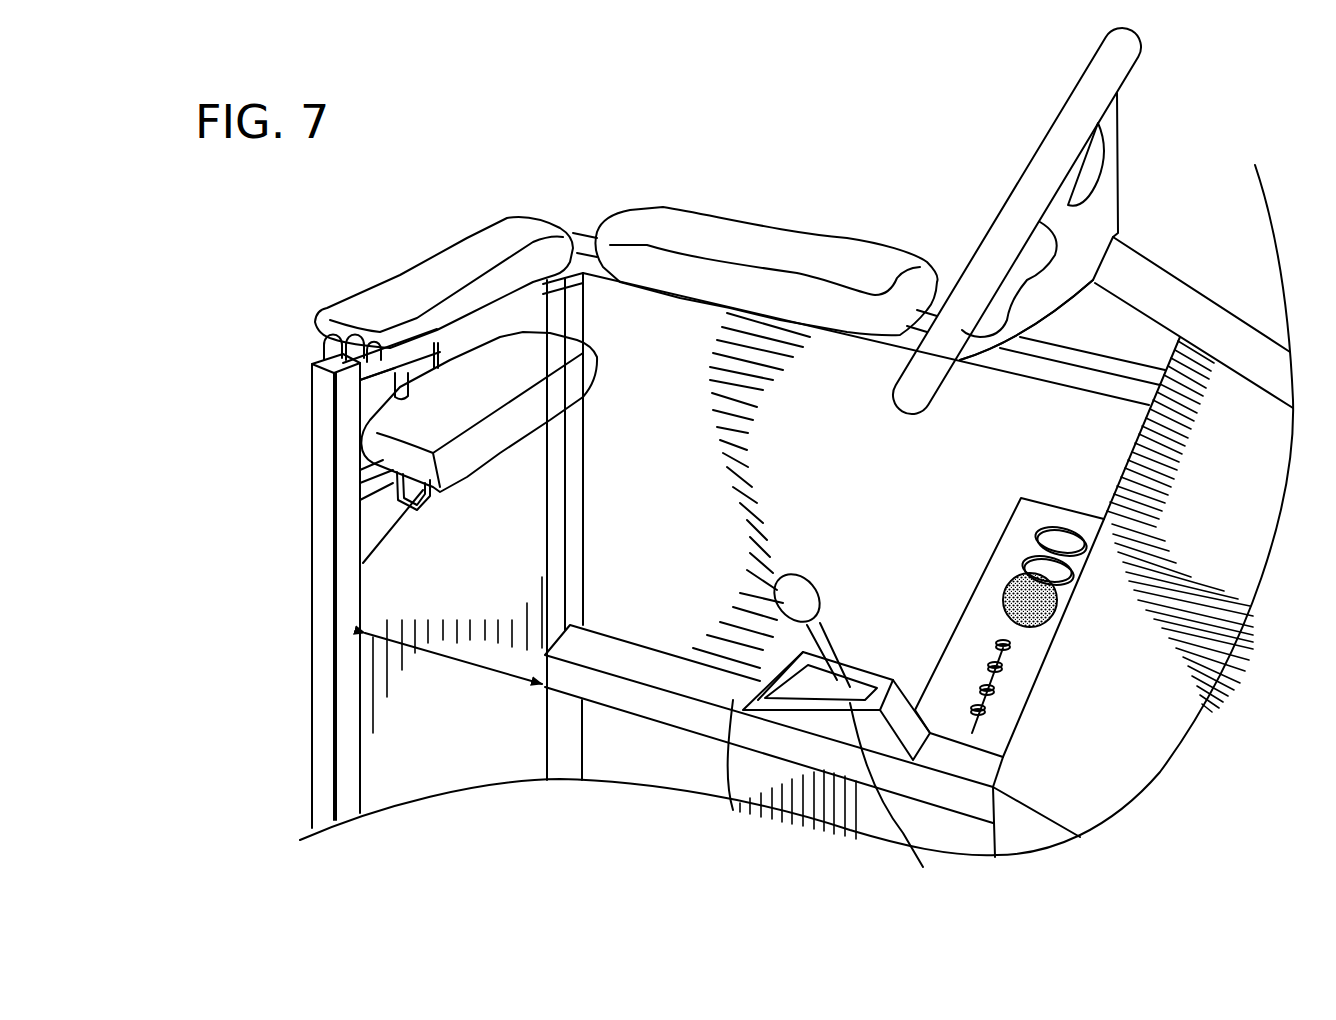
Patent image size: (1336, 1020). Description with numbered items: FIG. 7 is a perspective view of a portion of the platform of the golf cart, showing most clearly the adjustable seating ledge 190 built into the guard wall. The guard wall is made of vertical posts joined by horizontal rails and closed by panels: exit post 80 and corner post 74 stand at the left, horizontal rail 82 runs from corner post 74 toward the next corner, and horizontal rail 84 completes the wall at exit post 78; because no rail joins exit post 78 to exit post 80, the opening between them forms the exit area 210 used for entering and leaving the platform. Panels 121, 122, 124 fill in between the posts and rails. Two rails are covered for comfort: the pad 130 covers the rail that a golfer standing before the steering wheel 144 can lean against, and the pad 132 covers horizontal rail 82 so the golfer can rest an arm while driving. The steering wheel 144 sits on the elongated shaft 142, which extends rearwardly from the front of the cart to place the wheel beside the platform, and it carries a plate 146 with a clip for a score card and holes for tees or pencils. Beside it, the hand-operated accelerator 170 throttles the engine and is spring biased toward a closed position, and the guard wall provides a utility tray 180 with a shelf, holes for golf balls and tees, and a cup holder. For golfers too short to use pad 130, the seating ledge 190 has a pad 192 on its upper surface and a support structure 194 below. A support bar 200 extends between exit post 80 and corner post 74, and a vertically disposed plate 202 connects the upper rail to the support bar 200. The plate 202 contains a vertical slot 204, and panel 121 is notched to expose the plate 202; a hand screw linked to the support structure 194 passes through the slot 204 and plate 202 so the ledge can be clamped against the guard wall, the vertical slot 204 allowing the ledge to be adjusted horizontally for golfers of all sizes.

The corner post 74 is at (575, 318).
The exit post 78 is at (557, 712).
The exit post 80 is at (323, 493).
The horizontal rail 82 is at (1027, 367).
The horizontal rail 84 is at (733, 810).
The panel 121 is at (430, 589).
The panel 122 is at (787, 436).
The panel 124 is at (640, 781).
The pad 130 is at (413, 290).
The pad 132 is at (781, 242).
The elongated shaft 142 is at (1200, 327).
The steering wheel 144 is at (1023, 213).
The plate 146 is at (1085, 233).
The accelerator 170 is at (853, 734).
The utility tray 180 is at (1015, 545).
The seating ledge 190 is at (500, 493).
The pad 192 is at (497, 427).
The support structure 194 is at (363, 563).
The support bar 200 is at (397, 474).
The plate 202 is at (383, 398).
The slot 204 is at (400, 380).
The exit area 210 is at (453, 655).